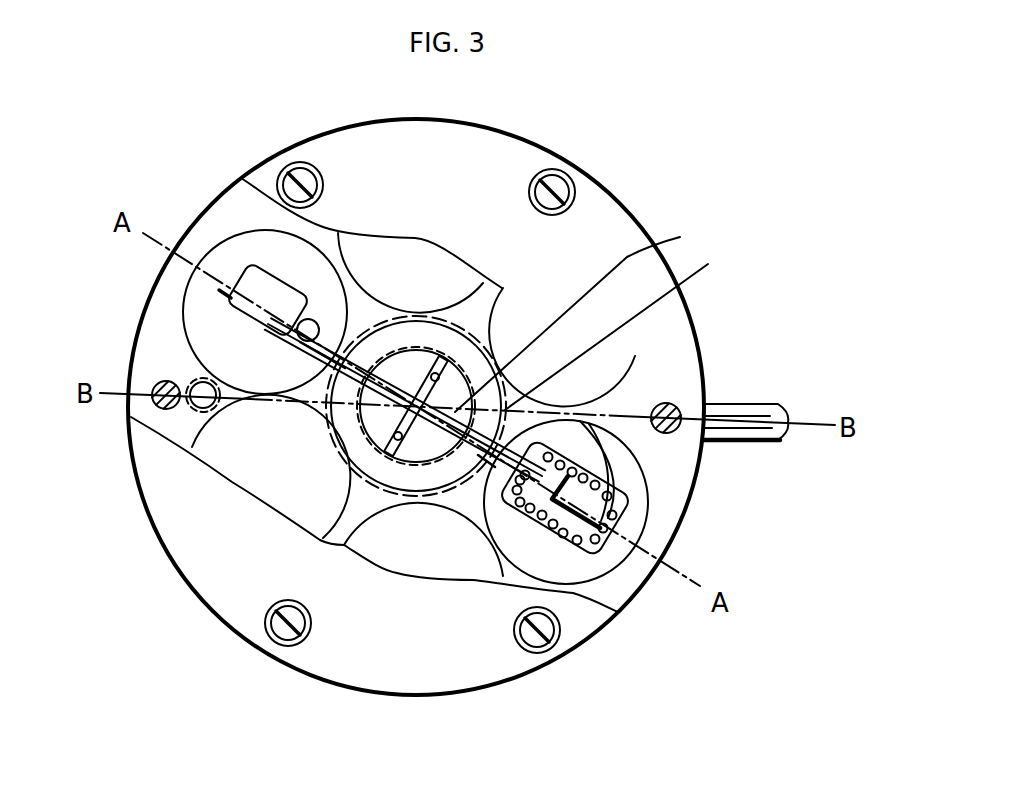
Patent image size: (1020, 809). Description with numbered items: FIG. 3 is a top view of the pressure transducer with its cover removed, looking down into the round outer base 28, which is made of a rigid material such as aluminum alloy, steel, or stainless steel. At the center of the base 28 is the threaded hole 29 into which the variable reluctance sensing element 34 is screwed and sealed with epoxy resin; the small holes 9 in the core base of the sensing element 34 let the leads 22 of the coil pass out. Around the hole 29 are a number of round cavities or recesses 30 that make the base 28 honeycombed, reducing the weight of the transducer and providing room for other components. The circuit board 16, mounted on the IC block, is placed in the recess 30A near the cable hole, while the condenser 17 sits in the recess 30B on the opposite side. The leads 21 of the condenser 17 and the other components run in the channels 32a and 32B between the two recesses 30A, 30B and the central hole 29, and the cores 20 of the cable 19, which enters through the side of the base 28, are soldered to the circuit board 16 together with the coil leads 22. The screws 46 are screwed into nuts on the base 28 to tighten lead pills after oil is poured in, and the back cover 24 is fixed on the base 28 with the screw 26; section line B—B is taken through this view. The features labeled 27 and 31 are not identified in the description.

The small holes 9 is at (437, 380).
The circuit board 16 is at (623, 505).
The condenser 17 is at (247, 303).
The cable 19 is at (763, 412).
The cores of cable 20 is at (605, 452).
The leads of condenser 21 is at (372, 386).
The leads of coil 22 is at (430, 440).
The back cover 24 is at (485, 150).
The screw 26 is at (563, 185).
The housing 27 is at (707, 380).
The round outer base 28 is at (637, 400).
The central hole 29 is at (583, 311).
The round cavities or recesses 30 is at (413, 257).
The cavity or recess 30A is at (633, 530).
The cavity or recess 30B is at (277, 247).
The assembly 31 is at (676, 138).
The channel 32a is at (487, 457).
The channel 32B is at (330, 362).
The variable reluctance sensing element 34 is at (623, 323).
The screw 46 is at (193, 383).